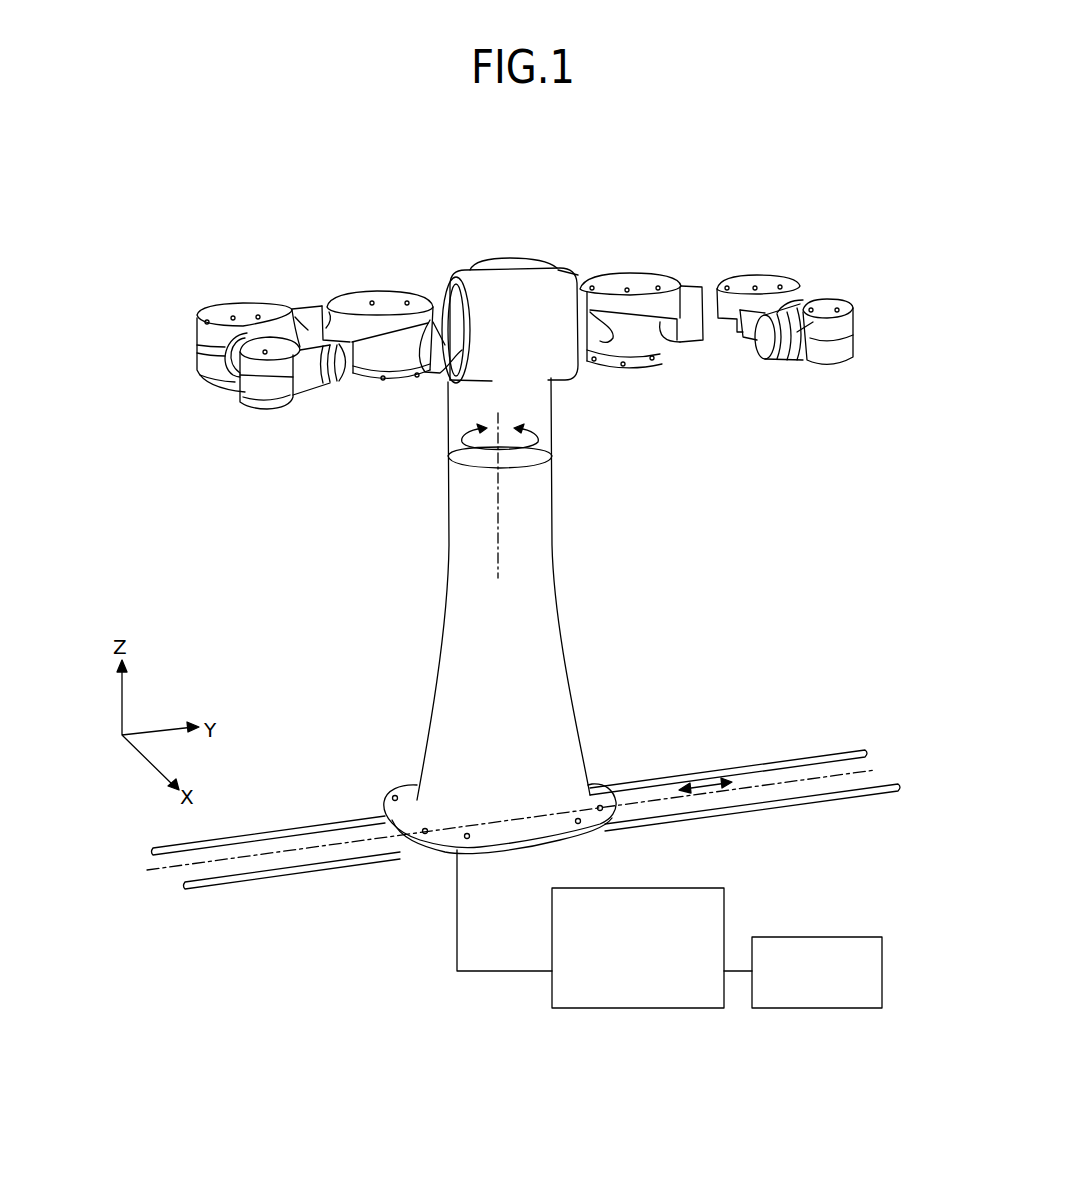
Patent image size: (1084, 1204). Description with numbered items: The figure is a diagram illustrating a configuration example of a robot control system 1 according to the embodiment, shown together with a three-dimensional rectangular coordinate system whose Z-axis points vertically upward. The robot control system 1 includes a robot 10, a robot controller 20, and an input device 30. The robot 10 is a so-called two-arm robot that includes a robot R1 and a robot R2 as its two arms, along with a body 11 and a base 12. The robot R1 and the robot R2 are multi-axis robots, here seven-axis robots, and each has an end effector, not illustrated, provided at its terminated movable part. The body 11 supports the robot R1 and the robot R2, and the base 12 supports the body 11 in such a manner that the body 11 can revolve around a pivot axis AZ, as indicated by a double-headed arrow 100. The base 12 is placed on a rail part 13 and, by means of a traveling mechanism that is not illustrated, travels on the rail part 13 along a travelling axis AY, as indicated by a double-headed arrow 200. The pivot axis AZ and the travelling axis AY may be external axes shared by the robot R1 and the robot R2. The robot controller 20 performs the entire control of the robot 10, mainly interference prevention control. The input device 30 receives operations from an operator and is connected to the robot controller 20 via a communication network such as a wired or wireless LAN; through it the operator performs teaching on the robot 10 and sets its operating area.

The robot control system 1 is at (188, 195).
The robot 10 is at (462, 230).
The body 11 is at (545, 265).
The base 12 is at (452, 638).
The rail part 13 is at (883, 782).
The robot controller 20 is at (672, 889).
The input device 30 is at (837, 937).
The double-headed arrow 100 is at (450, 453).
The double-headed arrow 200 is at (700, 777).
The robot R1 is at (803, 268).
The robot R2 is at (315, 290).
The pivot axis AZ is at (501, 512).
The travelling axis AY is at (492, 826).